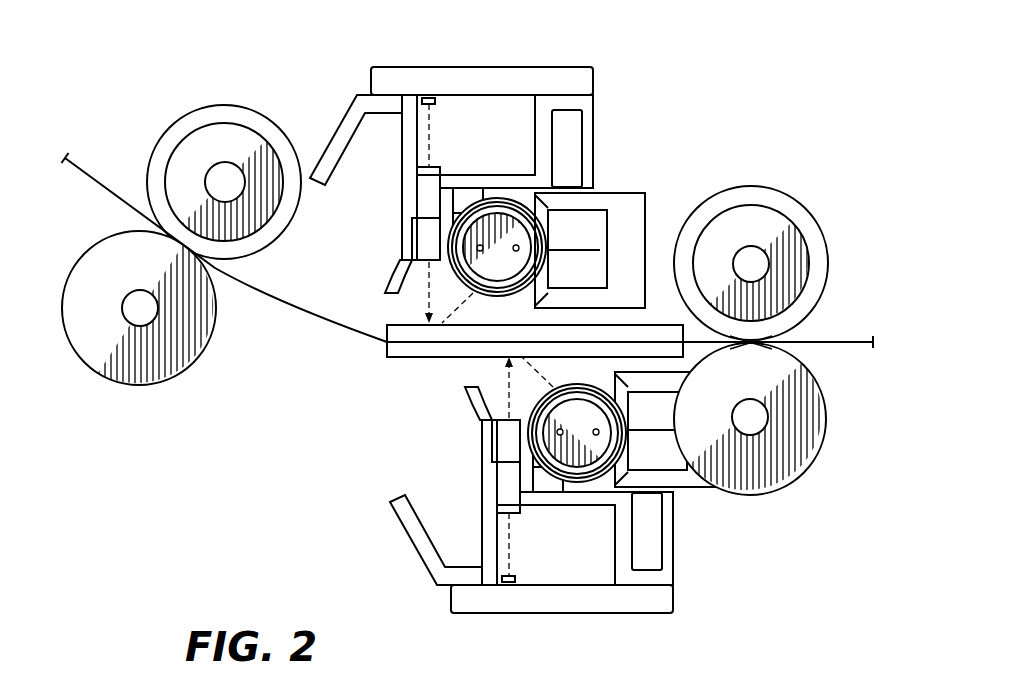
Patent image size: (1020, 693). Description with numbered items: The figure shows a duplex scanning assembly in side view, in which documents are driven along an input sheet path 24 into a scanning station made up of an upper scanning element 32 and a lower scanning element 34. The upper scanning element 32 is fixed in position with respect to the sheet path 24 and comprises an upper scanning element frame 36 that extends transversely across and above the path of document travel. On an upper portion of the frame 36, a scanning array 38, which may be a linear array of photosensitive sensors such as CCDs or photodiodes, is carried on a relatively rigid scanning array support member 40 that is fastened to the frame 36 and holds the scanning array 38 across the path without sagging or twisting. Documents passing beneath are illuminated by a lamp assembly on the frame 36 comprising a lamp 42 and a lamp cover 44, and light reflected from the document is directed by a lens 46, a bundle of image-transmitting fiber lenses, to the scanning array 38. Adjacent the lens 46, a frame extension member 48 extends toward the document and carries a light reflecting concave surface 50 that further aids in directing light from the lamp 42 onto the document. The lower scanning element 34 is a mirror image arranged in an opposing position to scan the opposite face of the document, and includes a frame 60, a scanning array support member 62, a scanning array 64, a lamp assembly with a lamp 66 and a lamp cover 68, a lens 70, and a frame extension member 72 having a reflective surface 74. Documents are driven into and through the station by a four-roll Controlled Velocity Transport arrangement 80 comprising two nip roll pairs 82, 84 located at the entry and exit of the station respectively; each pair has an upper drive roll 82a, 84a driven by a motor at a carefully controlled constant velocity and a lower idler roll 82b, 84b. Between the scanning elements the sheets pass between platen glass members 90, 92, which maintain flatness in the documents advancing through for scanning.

The input sheet path 24 is at (845, 336).
The upper scanning element 32 is at (642, 183).
The lower scanning element 34 is at (688, 594).
The upper scanning element frame 36 is at (628, 125).
The scanning array 38 is at (434, 101).
The scanning array support member 40 is at (556, 67).
The lamp 42 is at (511, 293).
The lamp cover 44 is at (458, 262).
The lens 46 is at (433, 168).
The frame extension member 48 is at (413, 292).
The light reflecting concave surface 50 is at (433, 293).
The frame 60 is at (688, 519).
The scanning array support member 62 is at (557, 605).
The scanning array 64 is at (513, 577).
The lamp 66 is at (594, 388).
The lamp cover 68 is at (531, 417).
The lens 70 is at (518, 510).
The frame extension member 72 is at (464, 396).
The reflective surface 74 is at (497, 411).
The Controlled Velocity Transport arrangement 80 is at (790, 308).
The nip roll pair 82 is at (790, 419).
The upper drive roll 82a is at (815, 222).
The lower idler roll 82b is at (818, 462).
The nip roll pair 84 is at (101, 229).
The upper drive roll 84a is at (163, 145).
The lower idler roll 84b is at (203, 353).
The platen glass member 90 is at (655, 323).
The platen glass member 92 is at (440, 353).